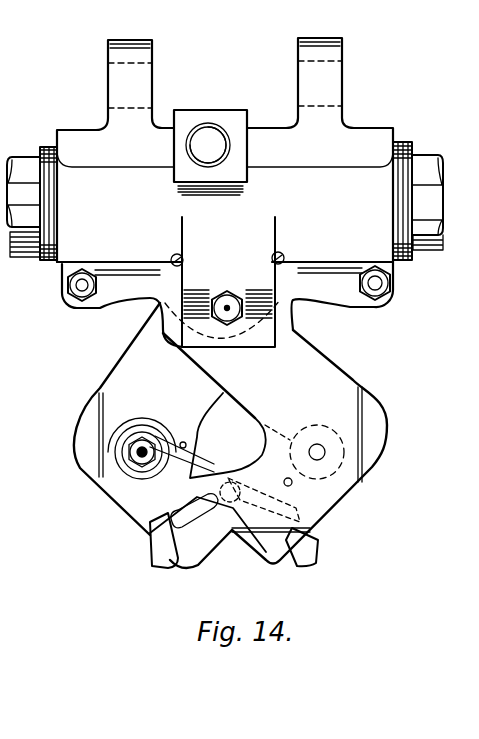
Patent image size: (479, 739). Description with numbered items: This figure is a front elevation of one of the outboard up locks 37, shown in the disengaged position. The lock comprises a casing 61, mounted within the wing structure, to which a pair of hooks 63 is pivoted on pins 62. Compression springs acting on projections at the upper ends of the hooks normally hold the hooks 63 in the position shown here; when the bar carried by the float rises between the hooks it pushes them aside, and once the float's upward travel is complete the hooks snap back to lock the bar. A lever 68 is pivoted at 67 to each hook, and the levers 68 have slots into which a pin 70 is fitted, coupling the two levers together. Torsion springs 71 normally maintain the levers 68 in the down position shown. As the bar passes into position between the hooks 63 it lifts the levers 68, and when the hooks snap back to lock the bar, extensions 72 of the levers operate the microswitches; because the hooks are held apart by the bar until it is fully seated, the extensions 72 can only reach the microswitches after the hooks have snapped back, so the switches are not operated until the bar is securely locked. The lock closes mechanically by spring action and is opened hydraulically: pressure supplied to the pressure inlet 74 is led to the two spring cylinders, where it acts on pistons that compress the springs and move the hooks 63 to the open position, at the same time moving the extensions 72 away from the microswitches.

The outboard up lock 37 is at (360, 124).
The pressure inlet 74 is at (212, 140).
The casing 61 is at (238, 239).
The pins 62 is at (229, 306).
The hooks 63 is at (126, 364).
The pivot 67 is at (116, 483).
The levers 68 is at (232, 468).
The pin 70 is at (232, 532).
The torsion springs 71 is at (186, 440).
The extensions 72 is at (147, 554).